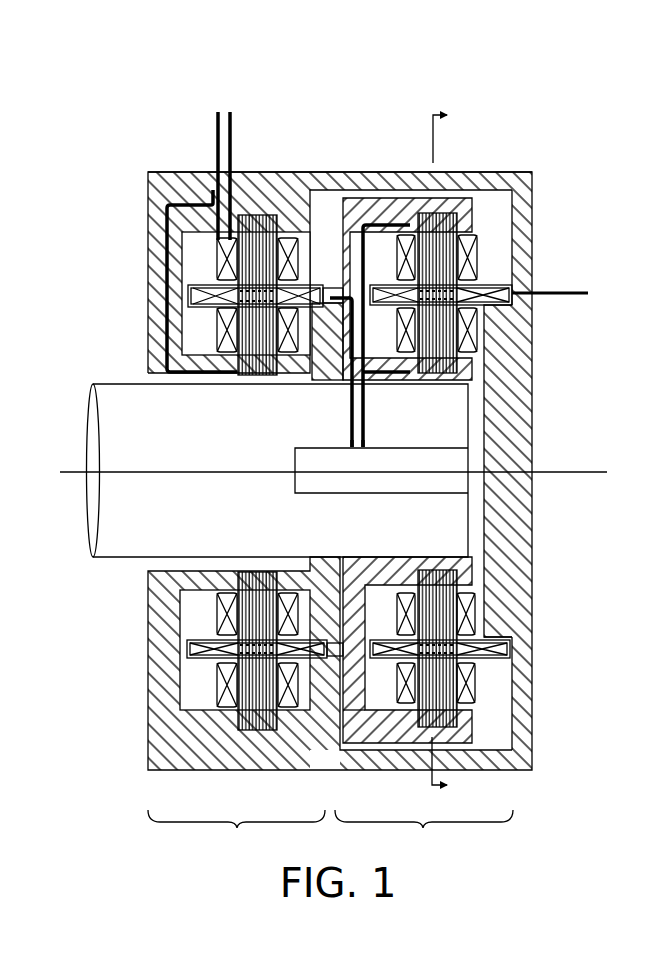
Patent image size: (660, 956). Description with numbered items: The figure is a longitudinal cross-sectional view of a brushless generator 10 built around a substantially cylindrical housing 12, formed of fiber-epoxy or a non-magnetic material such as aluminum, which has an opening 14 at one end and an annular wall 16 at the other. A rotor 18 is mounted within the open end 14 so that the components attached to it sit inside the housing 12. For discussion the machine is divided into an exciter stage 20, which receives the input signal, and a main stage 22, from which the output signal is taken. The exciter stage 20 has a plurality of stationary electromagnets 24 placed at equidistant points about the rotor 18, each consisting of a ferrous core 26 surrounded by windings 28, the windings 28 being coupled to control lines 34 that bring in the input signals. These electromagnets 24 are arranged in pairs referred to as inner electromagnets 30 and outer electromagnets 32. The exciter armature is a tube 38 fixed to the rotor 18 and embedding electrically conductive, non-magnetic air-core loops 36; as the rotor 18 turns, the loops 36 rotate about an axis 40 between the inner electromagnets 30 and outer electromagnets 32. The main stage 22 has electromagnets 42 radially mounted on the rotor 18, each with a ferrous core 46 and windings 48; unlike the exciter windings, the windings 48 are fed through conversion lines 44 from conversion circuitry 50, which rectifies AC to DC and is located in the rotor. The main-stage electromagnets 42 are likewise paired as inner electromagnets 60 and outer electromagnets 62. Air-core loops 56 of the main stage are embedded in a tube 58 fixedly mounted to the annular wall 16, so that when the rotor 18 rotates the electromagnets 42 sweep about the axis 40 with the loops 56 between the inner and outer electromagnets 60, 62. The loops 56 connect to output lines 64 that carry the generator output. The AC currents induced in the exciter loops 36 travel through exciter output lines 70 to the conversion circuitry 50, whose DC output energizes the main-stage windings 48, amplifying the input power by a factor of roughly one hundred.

The brushless generator 10 is at (362, 73).
The housing 12 is at (340, 171).
The opening 14 is at (146, 374).
The annular wall 16 is at (532, 254).
The rotor 18 is at (105, 557).
The exciter stage 20 is at (236, 835).
The main stage 22 is at (424, 835).
The stationary electromagnets 24 is at (247, 573).
The ferrous core 26 is at (283, 237).
The windings 28 is at (312, 255).
The inner electromagnets 30 is at (280, 573).
The outer electromagnets 32 is at (288, 735).
The control lines 34 is at (245, 93).
The air-core loops 36 is at (207, 653).
The tube 38 is at (327, 663).
The axis 40 is at (550, 468).
The electromagnets 42 is at (428, 563).
The conversion lines 44 is at (367, 431).
The ferrous core 46 is at (470, 228).
The windings 48 is at (477, 257).
The conversion circuitry 50 is at (317, 447).
The air-core loops 56 is at (512, 652).
The tube 58 is at (388, 645).
The inner electromagnets 60 is at (385, 608).
The outer electromagnets 62 is at (477, 687).
The output lines 64 is at (582, 290).
The exciter output lines 70 is at (352, 407).